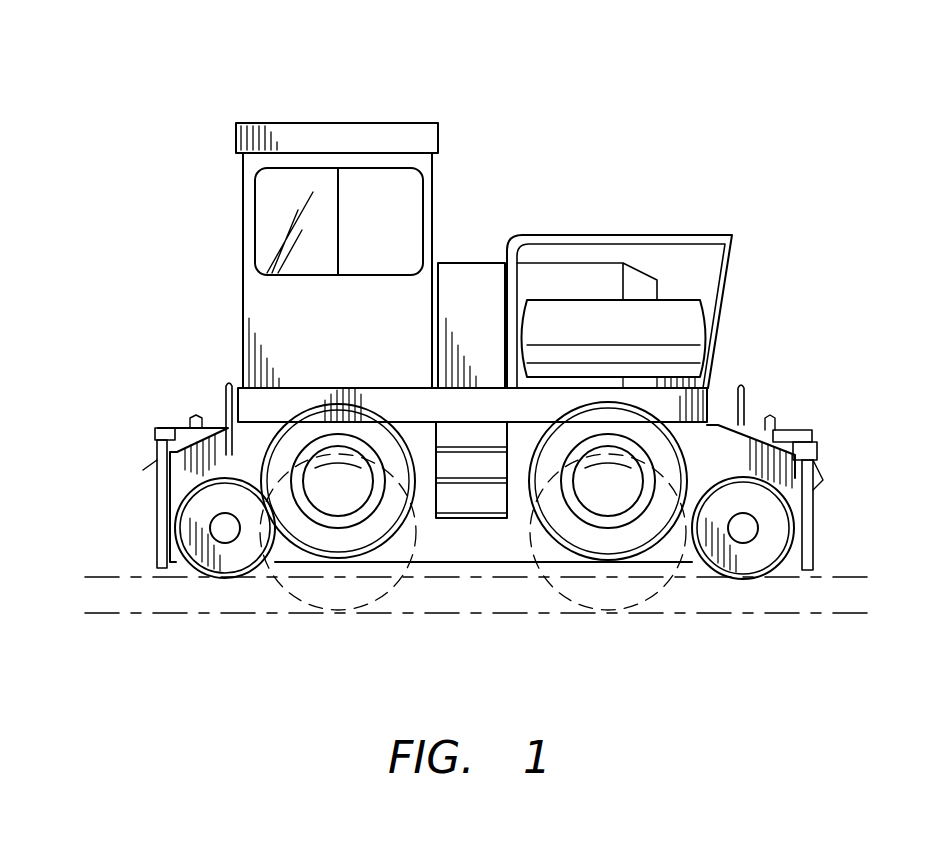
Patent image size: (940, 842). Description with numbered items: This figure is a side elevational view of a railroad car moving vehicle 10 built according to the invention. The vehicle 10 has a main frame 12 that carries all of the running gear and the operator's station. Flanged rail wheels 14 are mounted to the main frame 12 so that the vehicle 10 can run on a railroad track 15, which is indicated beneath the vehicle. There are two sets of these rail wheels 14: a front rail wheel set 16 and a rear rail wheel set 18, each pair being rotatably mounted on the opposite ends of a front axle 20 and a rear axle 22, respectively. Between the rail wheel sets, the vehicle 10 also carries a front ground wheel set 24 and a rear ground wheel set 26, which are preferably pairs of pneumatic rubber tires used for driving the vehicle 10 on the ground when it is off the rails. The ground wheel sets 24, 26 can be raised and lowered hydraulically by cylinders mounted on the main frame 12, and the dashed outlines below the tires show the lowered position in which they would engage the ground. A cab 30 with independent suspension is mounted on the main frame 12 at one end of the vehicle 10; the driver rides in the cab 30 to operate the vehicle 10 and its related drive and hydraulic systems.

The railroad car moving vehicle 10 is at (596, 146).
The main frame 12 is at (745, 455).
The rail wheels 14 is at (790, 498).
The railroad track 15 is at (872, 574).
The front rail wheel set 16 is at (775, 524).
The rear rail wheel set 18 is at (198, 507).
The front axle 20 is at (750, 532).
The rear axle 22 is at (223, 530).
The front ground wheel set 24 is at (593, 425).
The rear ground wheel set 26 is at (362, 428).
The cab 30 is at (297, 340).